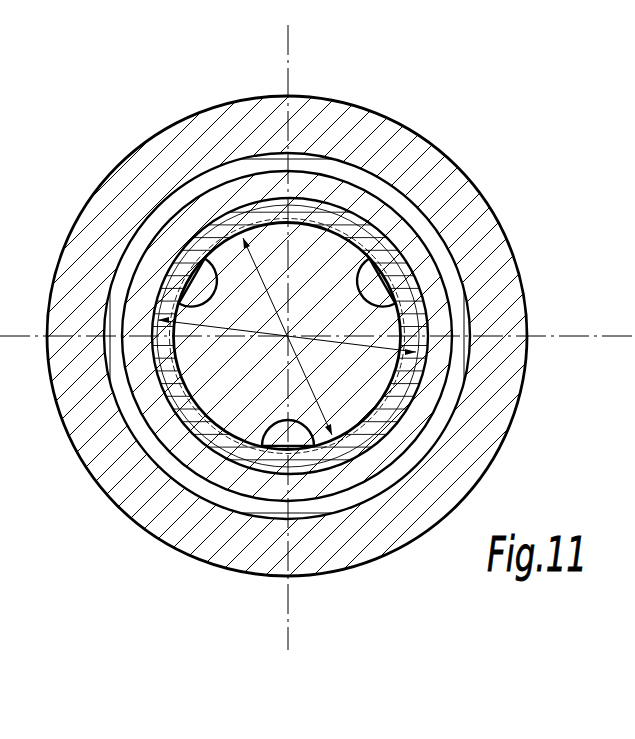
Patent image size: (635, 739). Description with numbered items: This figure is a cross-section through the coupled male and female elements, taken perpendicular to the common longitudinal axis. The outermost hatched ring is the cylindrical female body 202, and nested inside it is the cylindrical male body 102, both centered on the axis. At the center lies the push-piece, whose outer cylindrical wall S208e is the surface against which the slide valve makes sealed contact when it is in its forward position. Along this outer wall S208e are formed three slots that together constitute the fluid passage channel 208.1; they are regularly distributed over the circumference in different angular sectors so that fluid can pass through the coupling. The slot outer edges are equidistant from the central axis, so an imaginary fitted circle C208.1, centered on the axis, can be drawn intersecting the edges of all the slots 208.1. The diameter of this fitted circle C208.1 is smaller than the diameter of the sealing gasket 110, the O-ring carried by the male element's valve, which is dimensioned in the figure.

The female body 202 is at (443, 193).
The male body 102 is at (430, 277).
The sealing gasket 110 is at (388, 413).
The fluid passage channel 208.1 is at (370, 253).
The fitted circle C208.1 is at (240, 437).
The outer cylindrical wall of the push-piece S208e is at (358, 443).